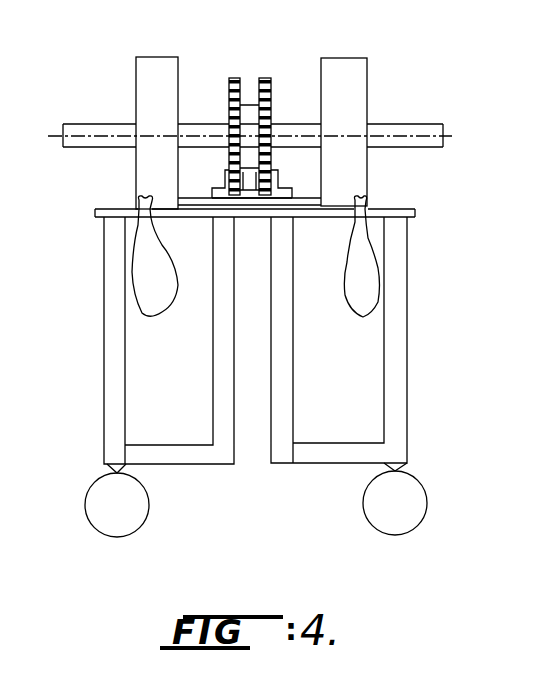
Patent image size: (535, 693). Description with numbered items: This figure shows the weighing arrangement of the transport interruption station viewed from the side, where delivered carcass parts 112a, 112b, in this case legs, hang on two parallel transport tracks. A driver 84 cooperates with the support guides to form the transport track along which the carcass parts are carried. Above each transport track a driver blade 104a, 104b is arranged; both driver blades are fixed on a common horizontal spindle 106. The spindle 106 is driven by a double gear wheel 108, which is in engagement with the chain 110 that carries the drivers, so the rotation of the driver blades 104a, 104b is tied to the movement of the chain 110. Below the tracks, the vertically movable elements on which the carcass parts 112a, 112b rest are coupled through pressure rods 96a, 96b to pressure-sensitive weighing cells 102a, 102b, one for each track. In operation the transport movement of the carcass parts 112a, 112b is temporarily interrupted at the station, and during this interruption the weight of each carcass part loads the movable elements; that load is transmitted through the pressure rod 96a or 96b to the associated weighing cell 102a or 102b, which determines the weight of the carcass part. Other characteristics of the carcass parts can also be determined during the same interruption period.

The driver 84 is at (255, 205).
The pressure rod 96a is at (398, 365).
The pressure rod 96b is at (112, 341).
The weighing cell 102a is at (408, 520).
The weighing cell 102b is at (106, 515).
The driver blade 104a is at (362, 92).
The driver blade 104b is at (163, 67).
The spindle 106 is at (83, 148).
The double gear wheel 108 is at (265, 78).
The chain 110 is at (267, 178).
The carcass part 112a is at (373, 277).
The carcass part 112b is at (138, 285).